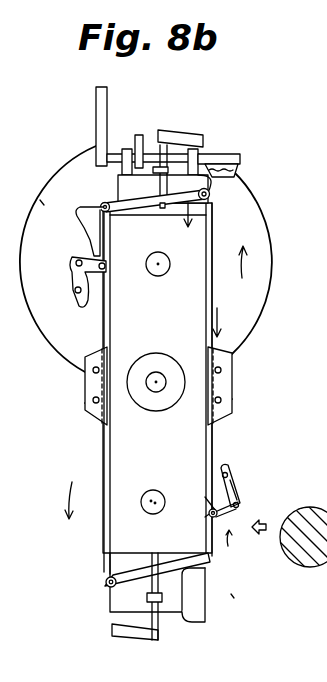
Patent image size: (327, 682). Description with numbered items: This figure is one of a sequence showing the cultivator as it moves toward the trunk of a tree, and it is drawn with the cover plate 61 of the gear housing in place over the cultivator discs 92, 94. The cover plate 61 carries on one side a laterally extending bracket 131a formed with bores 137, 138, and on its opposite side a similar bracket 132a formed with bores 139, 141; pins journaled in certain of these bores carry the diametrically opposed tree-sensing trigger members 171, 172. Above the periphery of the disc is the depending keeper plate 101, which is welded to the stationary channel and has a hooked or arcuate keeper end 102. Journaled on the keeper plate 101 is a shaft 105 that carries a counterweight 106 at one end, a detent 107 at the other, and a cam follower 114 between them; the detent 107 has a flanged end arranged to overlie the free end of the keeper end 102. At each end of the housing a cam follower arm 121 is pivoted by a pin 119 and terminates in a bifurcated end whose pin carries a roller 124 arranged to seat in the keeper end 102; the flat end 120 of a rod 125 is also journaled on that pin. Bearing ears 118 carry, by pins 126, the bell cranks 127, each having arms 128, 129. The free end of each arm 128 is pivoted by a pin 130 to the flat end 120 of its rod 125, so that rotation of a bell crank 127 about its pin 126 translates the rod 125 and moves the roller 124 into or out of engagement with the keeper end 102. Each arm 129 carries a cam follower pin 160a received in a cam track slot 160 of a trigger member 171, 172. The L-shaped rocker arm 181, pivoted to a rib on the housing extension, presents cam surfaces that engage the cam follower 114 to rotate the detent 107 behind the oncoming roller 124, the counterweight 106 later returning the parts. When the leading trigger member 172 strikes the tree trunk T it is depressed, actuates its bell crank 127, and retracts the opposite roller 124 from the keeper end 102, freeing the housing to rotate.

The cover plate 61 is at (168, 325).
The cultivator disc 92 is at (272, 265).
The second cultivator disc 94 is at (64, 437).
The keeper plate 101 is at (148, 180).
The keeper end 102 is at (204, 184).
The shaft 105 is at (206, 154).
The counterweight 106 is at (96, 115).
The detent 107 is at (240, 169).
The cam follower 114 is at (142, 133).
The bearing ears 118 is at (102, 258).
The pin 119 is at (103, 203).
The flat end 120 is at (208, 505).
The cam follower arm 121 is at (142, 210).
The roller 124 is at (211, 195).
The rod 125 is at (106, 328).
The pin 126 is at (240, 505).
The bell crank 127 is at (67, 271).
The arm 128 is at (244, 525).
The arm 129 is at (235, 489).
The pin 130 is at (209, 515).
The bracket 131a is at (230, 386).
The bracket 132a is at (85, 386).
The bore 137 is at (222, 370).
The bore 138 is at (222, 401).
The bore 139 is at (92, 370).
The bore 141 is at (92, 400).
The cam track slot 160 is at (224, 468).
The cam follower pin 160a is at (229, 476).
The trigger member 171 is at (40, 200).
The trigger member 172 is at (234, 598).
The rocker arm 181 is at (166, 131).
The tree trunk T is at (300, 562).